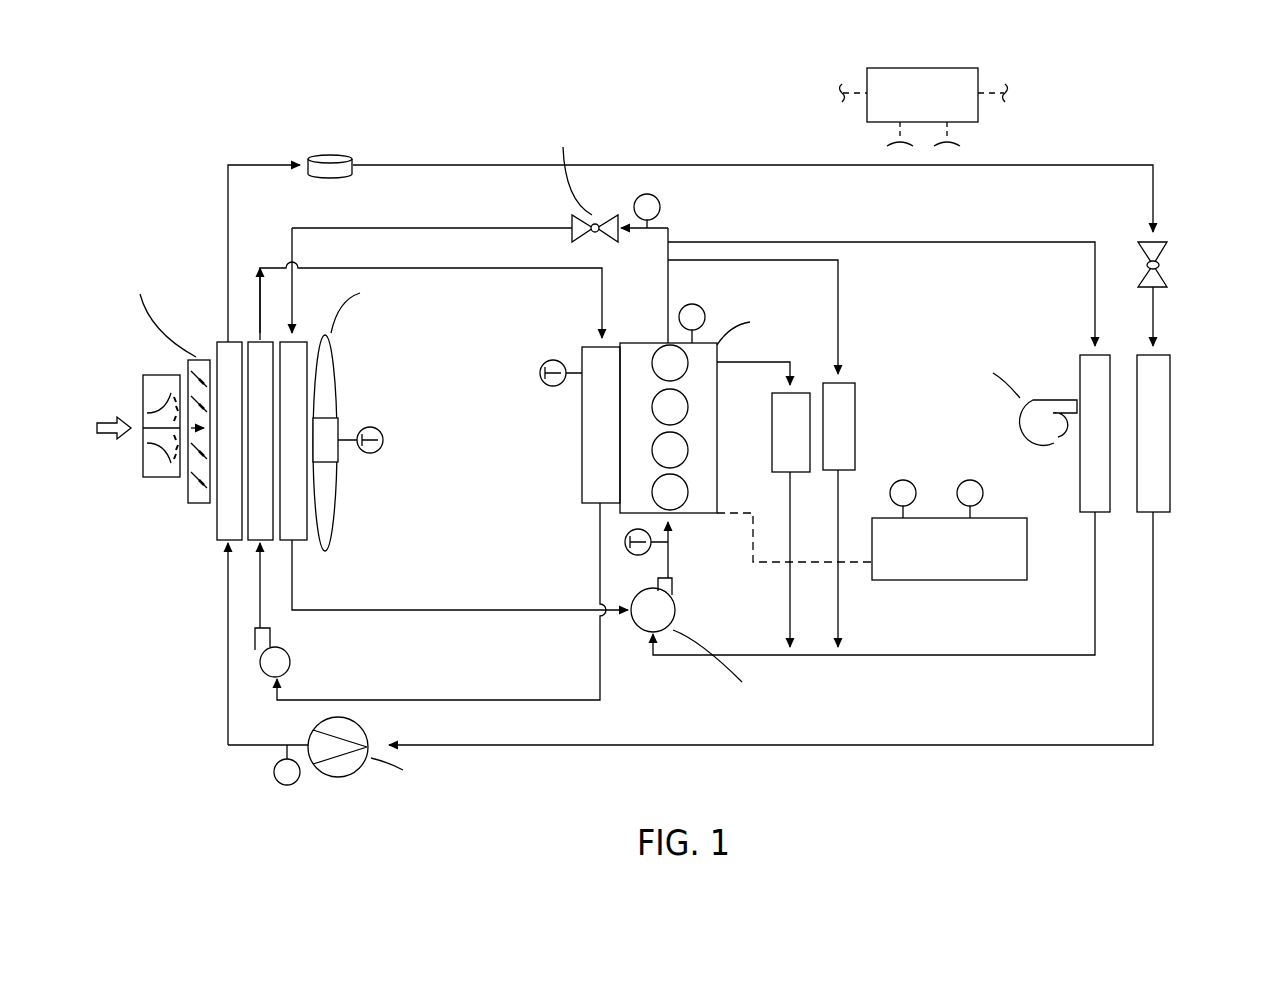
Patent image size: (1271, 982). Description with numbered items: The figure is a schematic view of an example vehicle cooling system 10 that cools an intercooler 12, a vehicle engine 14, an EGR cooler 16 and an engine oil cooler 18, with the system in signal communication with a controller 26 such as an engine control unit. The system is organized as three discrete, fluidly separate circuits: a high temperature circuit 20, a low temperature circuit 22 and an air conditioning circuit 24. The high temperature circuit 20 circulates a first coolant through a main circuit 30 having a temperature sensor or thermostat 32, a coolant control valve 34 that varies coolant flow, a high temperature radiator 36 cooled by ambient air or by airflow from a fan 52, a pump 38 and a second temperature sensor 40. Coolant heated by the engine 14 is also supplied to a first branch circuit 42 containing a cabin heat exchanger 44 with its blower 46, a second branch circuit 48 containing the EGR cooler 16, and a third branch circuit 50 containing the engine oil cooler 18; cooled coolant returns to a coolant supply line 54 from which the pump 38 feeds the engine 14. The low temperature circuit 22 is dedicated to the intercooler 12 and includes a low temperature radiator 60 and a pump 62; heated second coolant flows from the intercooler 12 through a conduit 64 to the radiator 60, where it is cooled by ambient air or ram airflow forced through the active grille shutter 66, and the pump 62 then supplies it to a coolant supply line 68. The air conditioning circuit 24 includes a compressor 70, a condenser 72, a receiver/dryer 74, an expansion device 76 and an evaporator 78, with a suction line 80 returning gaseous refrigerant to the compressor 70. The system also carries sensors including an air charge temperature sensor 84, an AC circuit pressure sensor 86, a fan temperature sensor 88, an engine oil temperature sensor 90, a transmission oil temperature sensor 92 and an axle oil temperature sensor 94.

The vehicle cooling system 10 is at (116, 117).
The intercooler 12 is at (582, 490).
The vehicle engine 14 is at (718, 480).
The exhaust gas recirculation (EGR) cooler 16 is at (802, 478).
The engine oil cooler 18 is at (856, 400).
The high temperature circuit 20 is at (408, 605).
The low temperature circuit 22 is at (267, 254).
The air conditioning circuit 24 is at (212, 674).
The controller 26 is at (979, 115).
The main circuit 30 is at (432, 227).
The temperature sensor or thermostat 32 is at (658, 196).
The coolant control valve 34 is at (600, 238).
The high temperature radiator 36 is at (298, 543).
The pump 38 is at (674, 617).
The second temperature sensor 40 is at (623, 548).
The first branch circuit 42 is at (862, 241).
The cabin heat exchanger 44 is at (1102, 520).
The blower 46 is at (1006, 410).
The second branch circuit 48 is at (731, 365).
The third branch circuit 50 is at (840, 288).
The fan 52 is at (337, 513).
The coolant supply line 54 is at (674, 577).
The low temperature radiator 60 is at (258, 336).
The pump 62 is at (288, 645).
The conduit 64 is at (567, 701).
The active grille shutter 66 is at (186, 490).
The coolant supply line 68 is at (467, 268).
The compressor 70 is at (328, 777).
The condenser 72 is at (216, 520).
The receiver/dryer 74 is at (356, 175).
The expansion device 76 is at (1161, 266).
The evaporator 78 is at (1172, 440).
The suction line 80 is at (648, 748).
The air charge temperature sensor 84 is at (561, 360).
The AC circuit pressure sensor 86 is at (285, 786).
The fan temperature sensor 88 is at (385, 438).
The engine oil temperature sensor 90 is at (679, 318).
The transmission oil temperature sensor 92 is at (890, 487).
The axle oil temperature sensor 94 is at (967, 481).